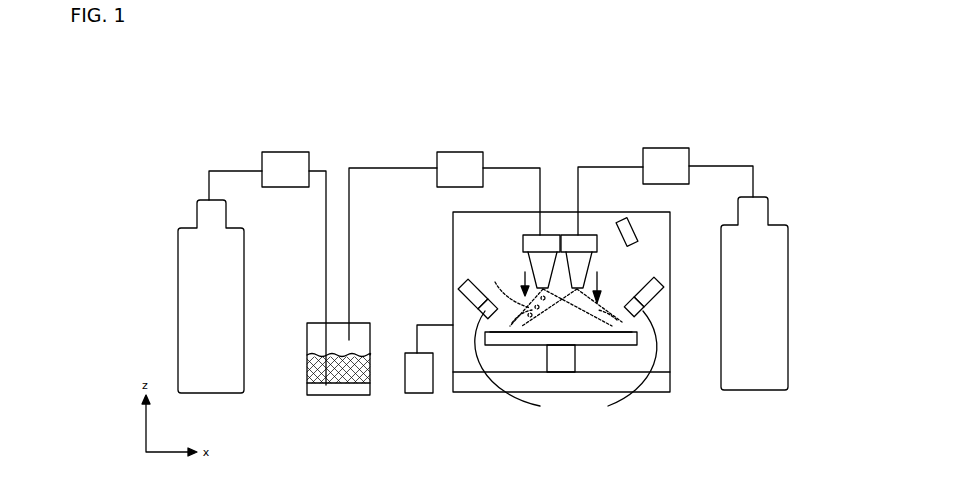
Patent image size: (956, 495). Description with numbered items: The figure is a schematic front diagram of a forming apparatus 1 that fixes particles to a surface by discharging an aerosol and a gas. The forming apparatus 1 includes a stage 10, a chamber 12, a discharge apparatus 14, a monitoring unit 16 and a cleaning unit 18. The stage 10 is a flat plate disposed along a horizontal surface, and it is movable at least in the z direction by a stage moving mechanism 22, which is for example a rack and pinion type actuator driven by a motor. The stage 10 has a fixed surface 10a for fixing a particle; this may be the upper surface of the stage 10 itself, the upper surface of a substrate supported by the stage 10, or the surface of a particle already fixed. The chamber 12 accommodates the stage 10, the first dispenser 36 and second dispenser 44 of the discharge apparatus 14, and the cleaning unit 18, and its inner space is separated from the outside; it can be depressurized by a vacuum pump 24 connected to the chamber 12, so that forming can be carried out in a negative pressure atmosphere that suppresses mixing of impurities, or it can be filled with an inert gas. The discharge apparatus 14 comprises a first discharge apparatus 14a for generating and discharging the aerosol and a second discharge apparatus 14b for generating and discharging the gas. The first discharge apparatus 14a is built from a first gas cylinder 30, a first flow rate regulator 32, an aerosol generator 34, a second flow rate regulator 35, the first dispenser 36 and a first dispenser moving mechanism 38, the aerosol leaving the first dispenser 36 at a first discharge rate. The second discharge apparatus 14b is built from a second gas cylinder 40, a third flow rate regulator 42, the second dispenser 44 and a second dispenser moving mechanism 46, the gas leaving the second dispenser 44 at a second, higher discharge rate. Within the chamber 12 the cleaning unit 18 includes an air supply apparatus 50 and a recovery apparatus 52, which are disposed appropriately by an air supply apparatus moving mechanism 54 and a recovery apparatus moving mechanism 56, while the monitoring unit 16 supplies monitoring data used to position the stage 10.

The forming apparatus 1 is at (752, 112).
The stage 10 is at (586, 344).
The fixed surface 10a is at (592, 332).
The chamber 12 is at (452, 247).
The discharge apparatus 14 is at (622, 80).
The first discharge apparatus 14a is at (474, 124).
The second discharge apparatus 14b is at (634, 129).
The monitoring unit 16 is at (636, 229).
The cleaning unit 18 is at (532, 428).
The stage moving mechanism 22 is at (547, 359).
The vacuum pump 24 is at (410, 352).
The first gas cylinder 30 is at (178, 250).
The first flow rate regulator 32 is at (282, 152).
The aerosol generator 34 is at (313, 323).
The second flow rate regulator 35 is at (452, 152).
The first dispenser 36 is at (530, 270).
The first dispenser moving mechanism 38 is at (523, 243).
The second gas cylinder 40 is at (788, 243).
The third flow rate regulator 42 is at (660, 148).
The second dispenser 44 is at (590, 271).
The second dispenser moving mechanism 46 is at (568, 233).
The air supply apparatus 50 is at (515, 369).
The recovery apparatus 52 is at (627, 369).
The air supply apparatus moving mechanism 54 is at (460, 290).
The recovery apparatus moving mechanism 56 is at (665, 280).